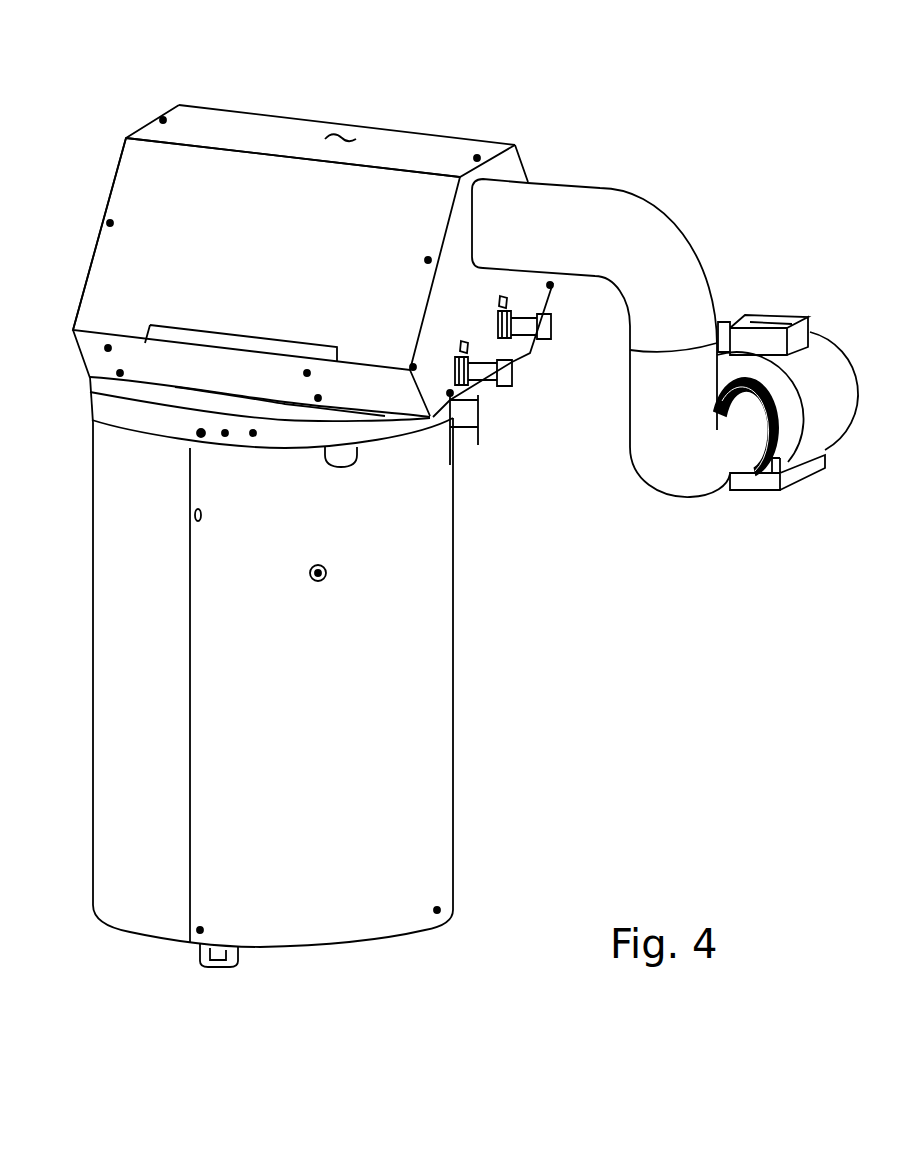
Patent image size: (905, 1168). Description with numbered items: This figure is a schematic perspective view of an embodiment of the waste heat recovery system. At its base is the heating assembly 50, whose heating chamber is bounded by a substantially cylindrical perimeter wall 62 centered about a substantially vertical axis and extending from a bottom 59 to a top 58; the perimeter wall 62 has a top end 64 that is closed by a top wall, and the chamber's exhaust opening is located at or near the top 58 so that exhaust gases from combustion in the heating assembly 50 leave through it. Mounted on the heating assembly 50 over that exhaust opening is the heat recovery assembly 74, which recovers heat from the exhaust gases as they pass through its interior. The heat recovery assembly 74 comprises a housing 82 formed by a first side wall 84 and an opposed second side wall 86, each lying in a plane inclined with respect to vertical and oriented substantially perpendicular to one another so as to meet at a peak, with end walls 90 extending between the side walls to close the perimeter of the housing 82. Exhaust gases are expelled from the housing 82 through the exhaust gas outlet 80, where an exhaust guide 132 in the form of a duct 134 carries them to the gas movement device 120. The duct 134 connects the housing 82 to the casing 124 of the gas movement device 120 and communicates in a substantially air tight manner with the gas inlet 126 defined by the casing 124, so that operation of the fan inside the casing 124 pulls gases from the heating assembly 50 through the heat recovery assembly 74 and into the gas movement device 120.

The heat recovery assembly 74 is at (458, 73).
The second side wall 86 is at (258, 112).
The housing 82 is at (438, 155).
The first side wall 84 is at (143, 197).
The exhaust gas outlet 80 is at (473, 220).
The exhaust guide 132 is at (629, 170).
The duct 134 is at (633, 229).
The gas movement device 120 is at (779, 268).
The gas inlet 126 is at (762, 435).
The casing 124 is at (775, 460).
The end walls 90 is at (527, 301).
The top end 64 is at (415, 420).
The top 58 is at (80, 408).
The perimeter wall 62 is at (427, 770).
The heating assembly 50 is at (490, 619).
The bottom 59 is at (76, 932).